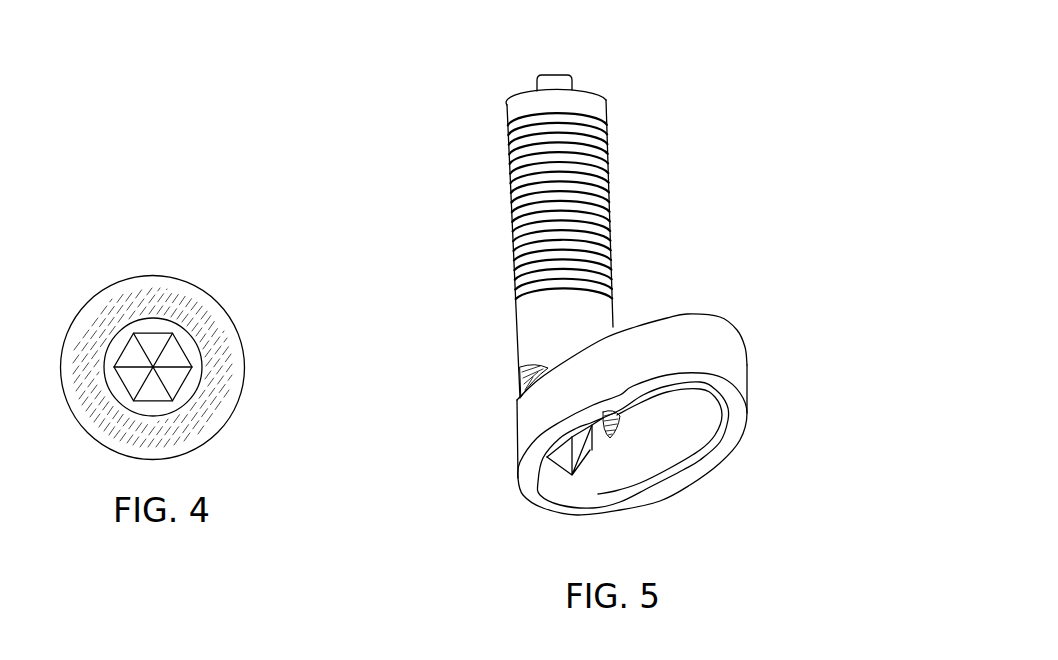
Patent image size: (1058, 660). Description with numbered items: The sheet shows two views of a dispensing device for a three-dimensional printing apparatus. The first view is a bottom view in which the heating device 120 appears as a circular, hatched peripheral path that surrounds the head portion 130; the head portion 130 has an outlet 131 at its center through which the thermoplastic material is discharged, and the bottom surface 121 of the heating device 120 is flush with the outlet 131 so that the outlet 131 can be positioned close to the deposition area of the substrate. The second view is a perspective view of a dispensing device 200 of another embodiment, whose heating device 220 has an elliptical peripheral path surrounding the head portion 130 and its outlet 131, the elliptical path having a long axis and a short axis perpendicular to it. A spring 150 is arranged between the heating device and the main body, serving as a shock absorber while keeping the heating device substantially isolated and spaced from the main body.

In FIG. 4, the heating device 120 is at (168, 283).
In FIG. 4, the bottom surface 121 is at (212, 395).
In FIG. 4, the head portion 130 is at (180, 347).
In FIG. 5, the head portion 130 is at (590, 450).
In FIG. 4, the outlet 131 is at (153, 366).
In FIG. 5, the outlet 131 is at (573, 476).
In FIG. 5, the spring 150 is at (613, 417).
In FIG. 5, the dispensing device 200 is at (708, 130).
In FIG. 5, the heating device 220 is at (737, 350).